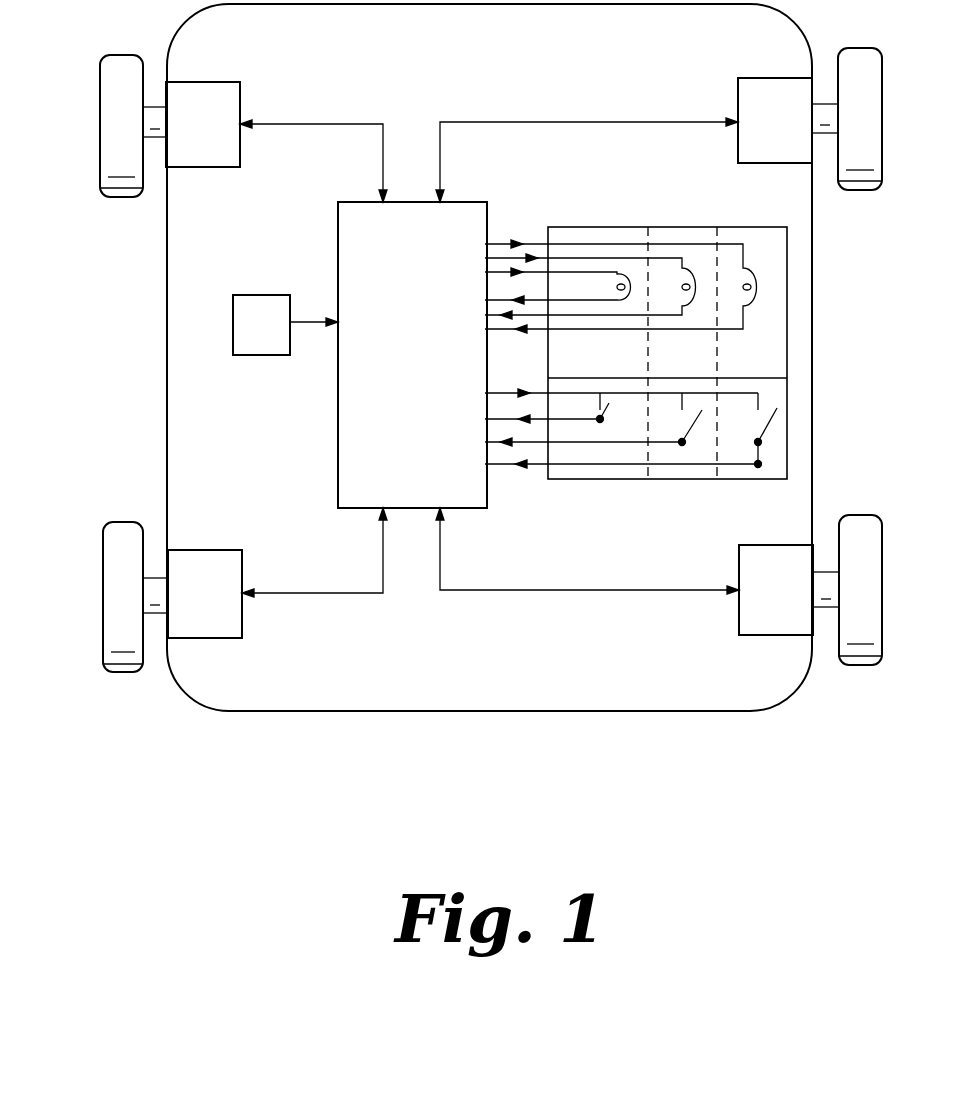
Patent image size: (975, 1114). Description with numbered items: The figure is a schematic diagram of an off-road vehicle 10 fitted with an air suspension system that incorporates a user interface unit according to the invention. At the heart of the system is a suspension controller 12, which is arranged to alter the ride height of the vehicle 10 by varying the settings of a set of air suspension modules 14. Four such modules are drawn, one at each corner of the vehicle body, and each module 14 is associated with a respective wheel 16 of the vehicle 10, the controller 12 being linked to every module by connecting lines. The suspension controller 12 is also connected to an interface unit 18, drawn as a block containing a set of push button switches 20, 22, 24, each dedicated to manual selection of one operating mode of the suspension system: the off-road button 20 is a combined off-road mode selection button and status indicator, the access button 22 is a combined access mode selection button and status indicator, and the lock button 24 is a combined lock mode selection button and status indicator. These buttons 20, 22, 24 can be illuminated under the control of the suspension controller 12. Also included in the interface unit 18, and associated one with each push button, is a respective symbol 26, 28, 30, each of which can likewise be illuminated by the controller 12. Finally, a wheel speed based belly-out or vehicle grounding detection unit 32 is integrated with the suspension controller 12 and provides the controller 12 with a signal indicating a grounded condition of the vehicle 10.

The off-road vehicle 10 is at (395, 54).
The suspension controller 12 is at (395, 337).
The air suspension modules 14 is at (187, 135).
The wheel 16 is at (118, 116).
The interface unit 18 is at (787, 333).
The off-road button 20 is at (598, 482).
The access button 22 is at (701, 482).
The lock button 24 is at (770, 482).
The symbol 26 is at (622, 227).
The symbol 28 is at (675, 227).
The symbol 30 is at (750, 227).
The belly-out/vehicle grounding detection unit 32 is at (248, 336).